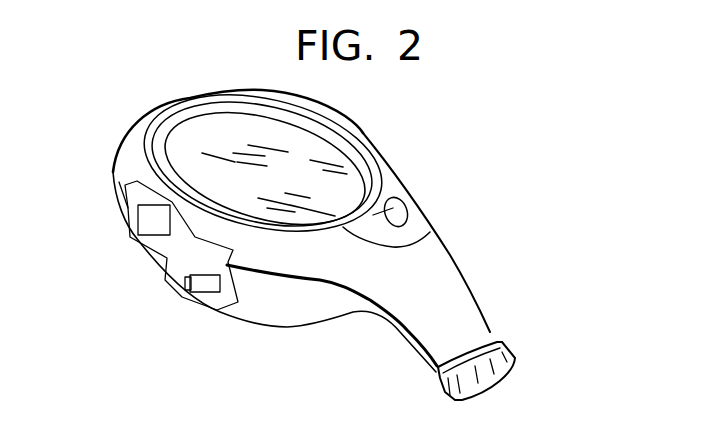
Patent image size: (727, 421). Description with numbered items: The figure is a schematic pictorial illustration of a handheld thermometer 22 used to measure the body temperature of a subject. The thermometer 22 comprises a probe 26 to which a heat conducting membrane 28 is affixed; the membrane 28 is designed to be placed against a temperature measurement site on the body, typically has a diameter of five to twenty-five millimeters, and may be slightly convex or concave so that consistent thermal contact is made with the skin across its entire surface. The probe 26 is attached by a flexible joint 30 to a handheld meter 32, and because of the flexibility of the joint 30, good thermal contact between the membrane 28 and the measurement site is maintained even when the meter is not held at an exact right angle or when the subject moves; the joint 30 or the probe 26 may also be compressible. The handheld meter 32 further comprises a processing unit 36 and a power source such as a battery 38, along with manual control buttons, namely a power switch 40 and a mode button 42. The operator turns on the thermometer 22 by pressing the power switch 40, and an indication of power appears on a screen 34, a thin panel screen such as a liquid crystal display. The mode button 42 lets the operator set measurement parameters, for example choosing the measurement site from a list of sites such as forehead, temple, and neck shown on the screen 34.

The thermometer 22 is at (108, 83).
The probe 26 is at (508, 348).
The heat conducting membrane 28 is at (490, 385).
The flexible joint 30 is at (489, 332).
The handheld meter 32 is at (190, 97).
The screen 34 is at (343, 162).
The processing unit 36 is at (152, 220).
The battery 38 is at (208, 286).
The power switch 40 is at (398, 203).
The mode button 42 is at (430, 232).